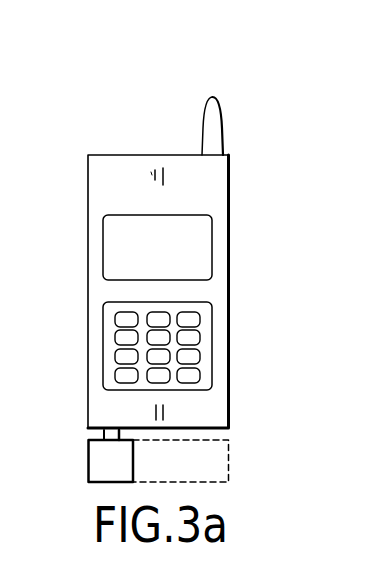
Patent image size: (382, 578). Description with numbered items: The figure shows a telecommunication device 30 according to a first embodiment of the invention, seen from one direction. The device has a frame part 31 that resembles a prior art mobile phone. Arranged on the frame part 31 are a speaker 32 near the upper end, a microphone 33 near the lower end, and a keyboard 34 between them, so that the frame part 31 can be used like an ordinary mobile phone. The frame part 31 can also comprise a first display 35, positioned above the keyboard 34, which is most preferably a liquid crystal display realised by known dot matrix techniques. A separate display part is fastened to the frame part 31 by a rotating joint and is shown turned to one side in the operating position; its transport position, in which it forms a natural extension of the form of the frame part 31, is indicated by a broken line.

The telecommunication device 30 is at (243, 62).
The frame part 31 is at (228, 281).
The speaker 32 is at (157, 172).
The microphone 33 is at (165, 410).
The keyboard 34 is at (212, 352).
The first display 35 is at (202, 250).